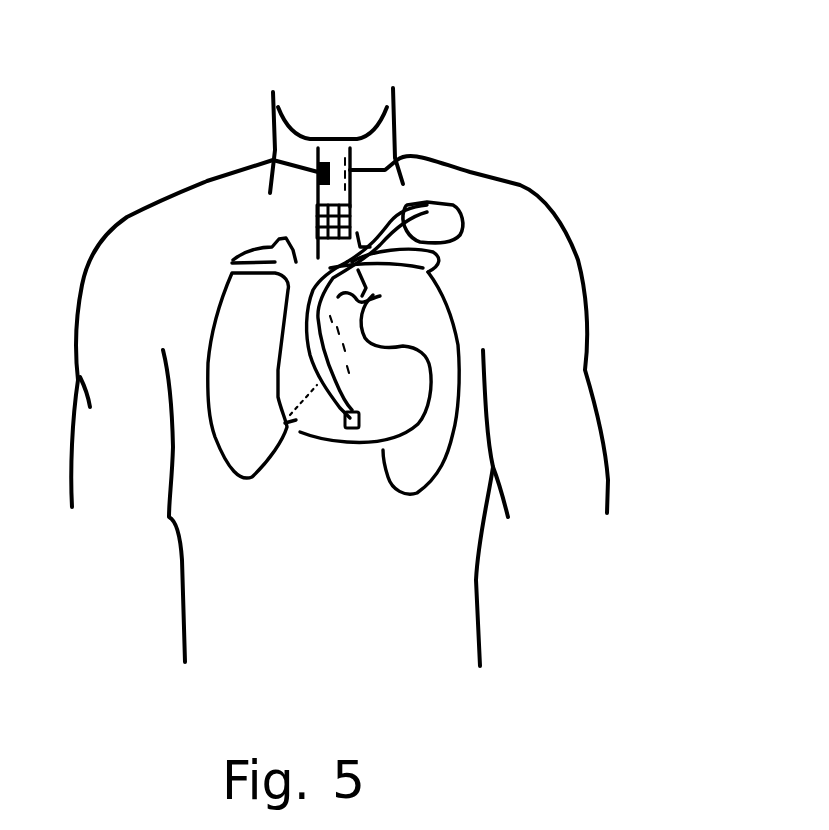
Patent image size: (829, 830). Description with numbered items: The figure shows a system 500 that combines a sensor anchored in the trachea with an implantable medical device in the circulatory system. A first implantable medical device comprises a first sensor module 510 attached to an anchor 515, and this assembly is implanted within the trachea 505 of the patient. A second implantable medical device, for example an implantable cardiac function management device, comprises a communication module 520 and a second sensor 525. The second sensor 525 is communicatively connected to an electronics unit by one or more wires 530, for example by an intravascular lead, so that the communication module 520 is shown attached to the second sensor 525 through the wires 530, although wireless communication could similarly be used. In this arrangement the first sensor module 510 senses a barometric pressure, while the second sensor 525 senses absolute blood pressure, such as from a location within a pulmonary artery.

The system 500 is at (528, 79).
The trachea 505 is at (393, 157).
The first sensor module 510 is at (322, 172).
The anchor 515 is at (320, 227).
The communication module 520 is at (452, 200).
The second sensor 525 is at (357, 413).
The wires 530 is at (333, 380).